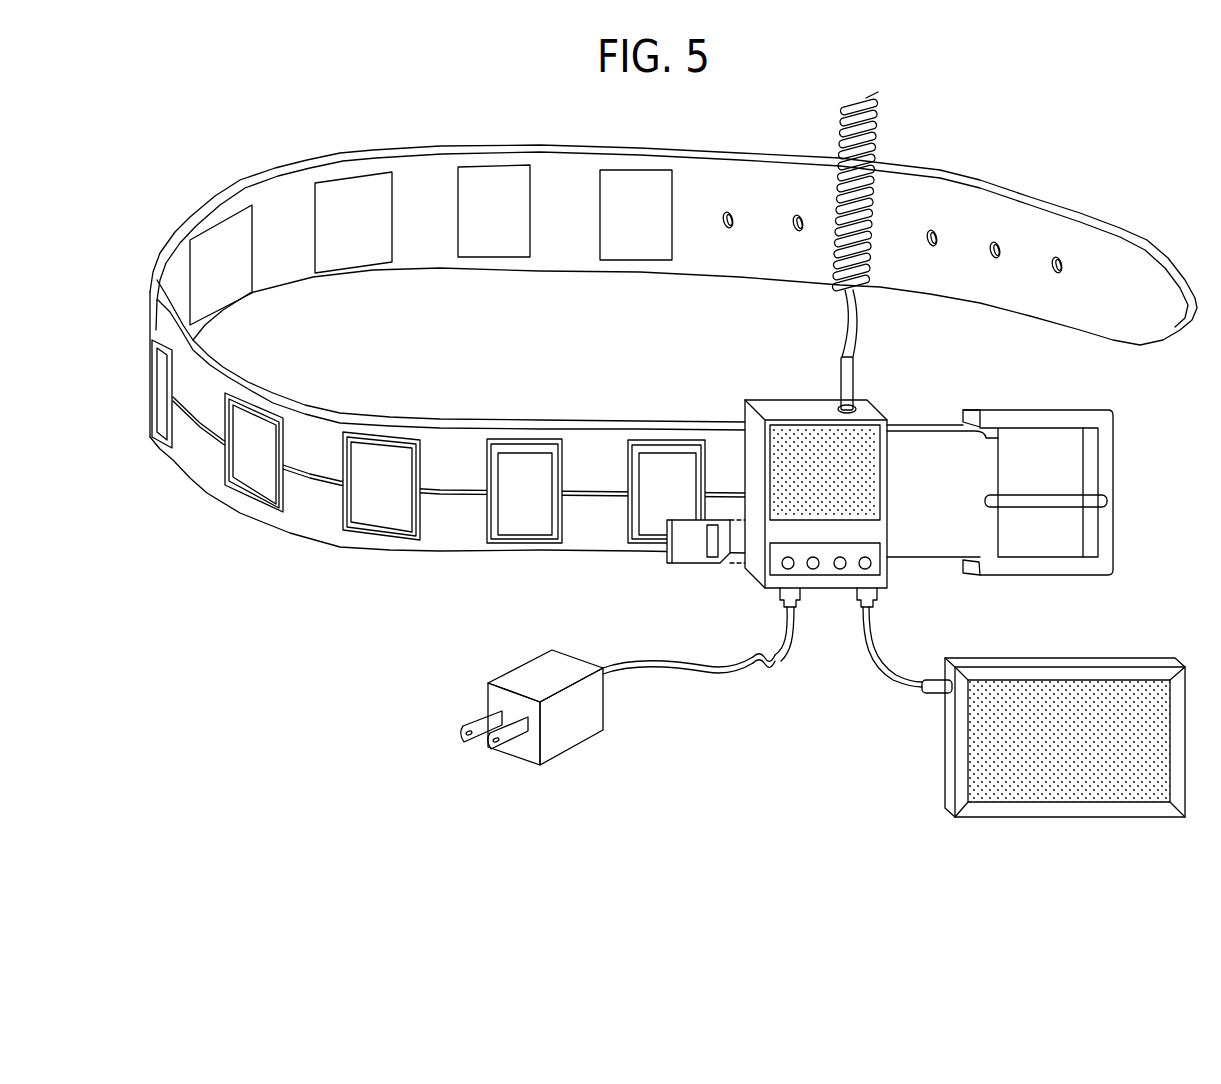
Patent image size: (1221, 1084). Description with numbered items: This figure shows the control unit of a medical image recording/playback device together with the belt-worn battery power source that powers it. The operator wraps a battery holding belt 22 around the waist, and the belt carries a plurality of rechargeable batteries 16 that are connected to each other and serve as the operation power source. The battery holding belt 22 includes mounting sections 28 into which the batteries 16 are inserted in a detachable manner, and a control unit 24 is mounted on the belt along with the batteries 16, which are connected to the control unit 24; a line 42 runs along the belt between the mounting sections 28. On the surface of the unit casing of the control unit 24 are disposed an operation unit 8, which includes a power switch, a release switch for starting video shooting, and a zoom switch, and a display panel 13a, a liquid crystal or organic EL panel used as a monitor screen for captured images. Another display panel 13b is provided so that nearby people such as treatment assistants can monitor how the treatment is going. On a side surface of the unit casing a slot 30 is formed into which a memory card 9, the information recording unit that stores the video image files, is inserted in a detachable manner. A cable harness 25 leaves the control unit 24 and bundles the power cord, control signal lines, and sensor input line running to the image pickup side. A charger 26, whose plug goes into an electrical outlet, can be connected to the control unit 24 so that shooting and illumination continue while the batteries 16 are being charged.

The operation unit 8 is at (823, 577).
The memory card 9 is at (678, 567).
The display panel 13a is at (870, 477).
The display panel 13b is at (1137, 660).
The rechargeable battery 16 is at (253, 485).
The battery holding belt 22 is at (923, 552).
The control unit 24 is at (795, 408).
The cable harness 25 is at (873, 118).
The charger 26 is at (512, 678).
The mounting section 28 is at (218, 213).
The slot 30 is at (752, 573).
The seam 42 is at (592, 492).